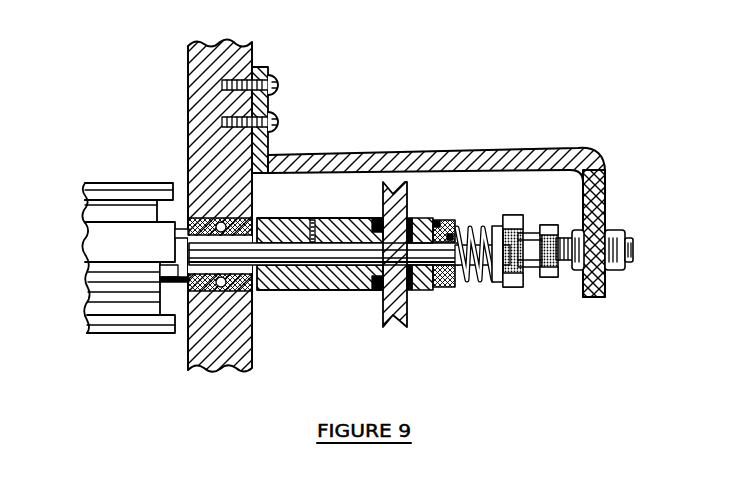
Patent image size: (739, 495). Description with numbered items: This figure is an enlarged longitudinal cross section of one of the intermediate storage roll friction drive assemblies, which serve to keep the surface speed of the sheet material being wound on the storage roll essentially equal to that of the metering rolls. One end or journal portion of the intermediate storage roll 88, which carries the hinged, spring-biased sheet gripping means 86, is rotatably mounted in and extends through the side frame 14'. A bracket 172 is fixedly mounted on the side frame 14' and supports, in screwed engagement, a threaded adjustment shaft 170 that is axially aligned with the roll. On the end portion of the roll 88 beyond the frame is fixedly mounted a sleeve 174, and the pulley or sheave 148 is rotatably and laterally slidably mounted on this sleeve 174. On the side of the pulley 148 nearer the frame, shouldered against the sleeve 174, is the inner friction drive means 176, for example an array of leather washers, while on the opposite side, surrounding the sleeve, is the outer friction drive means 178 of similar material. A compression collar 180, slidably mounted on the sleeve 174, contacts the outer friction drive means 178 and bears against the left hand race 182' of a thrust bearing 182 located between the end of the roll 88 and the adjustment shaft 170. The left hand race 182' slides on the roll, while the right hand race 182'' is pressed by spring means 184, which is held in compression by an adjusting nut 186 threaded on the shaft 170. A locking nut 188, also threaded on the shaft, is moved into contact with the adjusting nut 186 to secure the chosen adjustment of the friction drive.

The side frame 14' is at (196, 205).
The sheet gripping means 86 is at (103, 186).
The intermediate storage roll 88 is at (95, 222).
The intermediate storage roll pulley 148 is at (406, 320).
The threaded adjustment shaft 170 is at (574, 270).
The bracket 172 is at (314, 157).
The sleeve 174 is at (320, 290).
The inner friction drive means 176 is at (375, 219).
The outer friction drive means 178 is at (415, 218).
The compression collar 180 is at (428, 291).
The thrust bearing 182 is at (454, 238).
The left hand race 182' is at (449, 198).
The right hand race 182'' is at (467, 222).
The spring means 184 is at (489, 281).
The adjusting nut 186 is at (514, 222).
The locking nut 188 is at (547, 234).